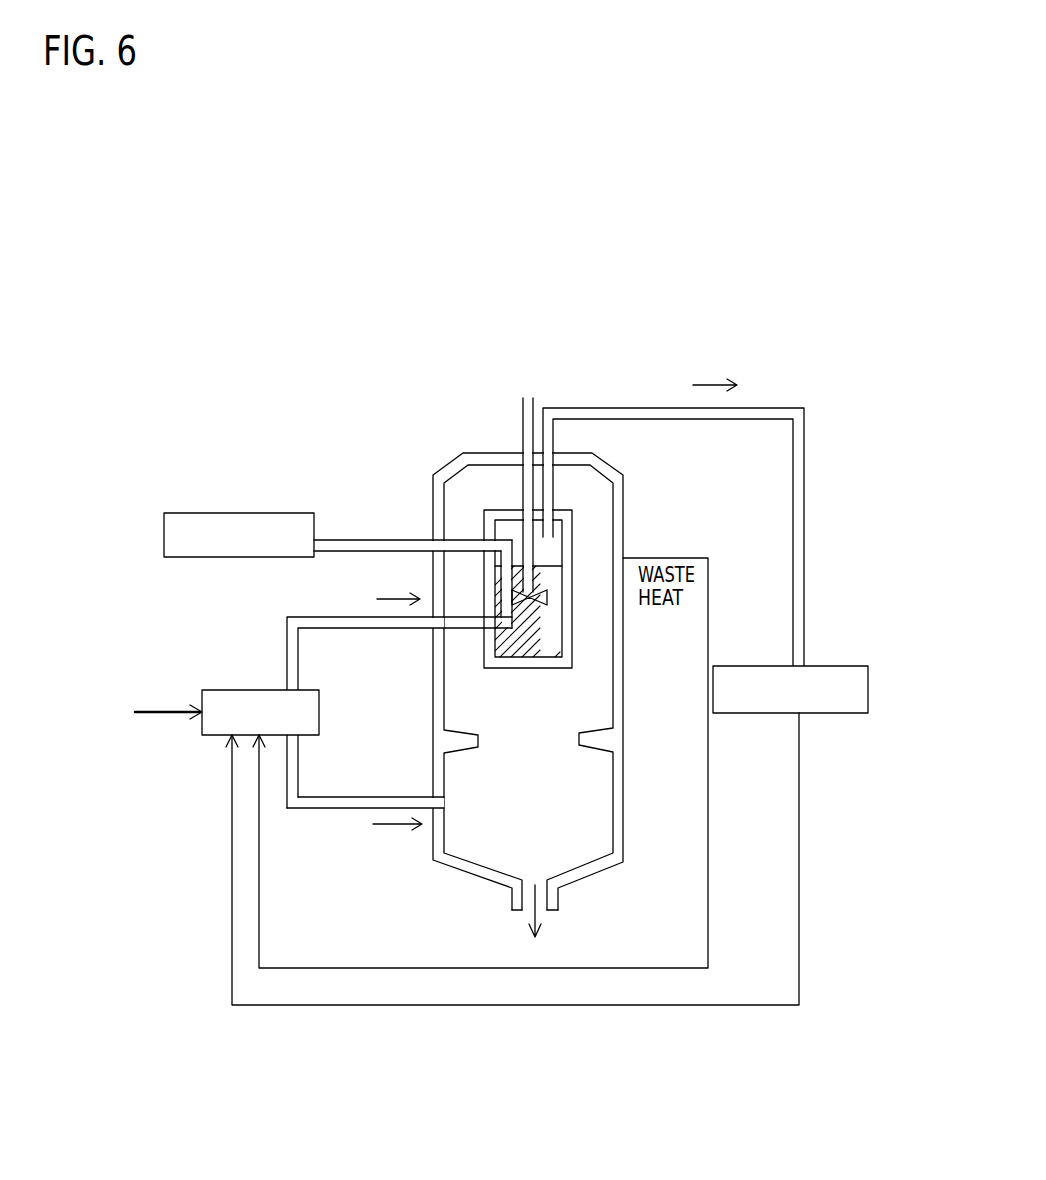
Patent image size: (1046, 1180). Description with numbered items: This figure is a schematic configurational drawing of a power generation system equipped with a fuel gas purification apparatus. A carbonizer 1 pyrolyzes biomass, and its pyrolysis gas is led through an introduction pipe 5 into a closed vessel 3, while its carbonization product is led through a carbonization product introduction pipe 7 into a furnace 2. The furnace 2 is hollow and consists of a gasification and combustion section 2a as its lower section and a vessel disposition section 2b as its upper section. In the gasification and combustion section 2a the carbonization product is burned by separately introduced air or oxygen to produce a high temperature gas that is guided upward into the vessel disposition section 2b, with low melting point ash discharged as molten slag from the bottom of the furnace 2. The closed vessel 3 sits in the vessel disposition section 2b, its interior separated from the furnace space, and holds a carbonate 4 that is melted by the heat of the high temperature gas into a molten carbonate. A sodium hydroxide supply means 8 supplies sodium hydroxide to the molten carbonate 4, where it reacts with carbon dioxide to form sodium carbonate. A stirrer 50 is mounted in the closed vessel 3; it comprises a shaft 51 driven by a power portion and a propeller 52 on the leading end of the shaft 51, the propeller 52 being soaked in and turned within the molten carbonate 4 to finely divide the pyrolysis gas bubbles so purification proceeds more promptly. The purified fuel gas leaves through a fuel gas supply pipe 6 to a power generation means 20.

The carbonizer 1 is at (205, 688).
The furnace 2 is at (453, 460).
The gasification and combustion section 2a is at (578, 823).
The vessel disposition section 2b is at (455, 497).
The closed vessel 3 is at (480, 532).
The carbonate 4 is at (507, 586).
The introduction pipe 5 is at (287, 653).
The fuel gas supply pipe 6 is at (573, 408).
The carbonization product introduction pipe 7 is at (295, 810).
The sodium hydroxide supply means 8 is at (258, 513).
The power generation means 20 is at (830, 665).
The stirrer 50 is at (562, 444).
The shaft 51 is at (523, 443).
The propeller 52 is at (540, 592).